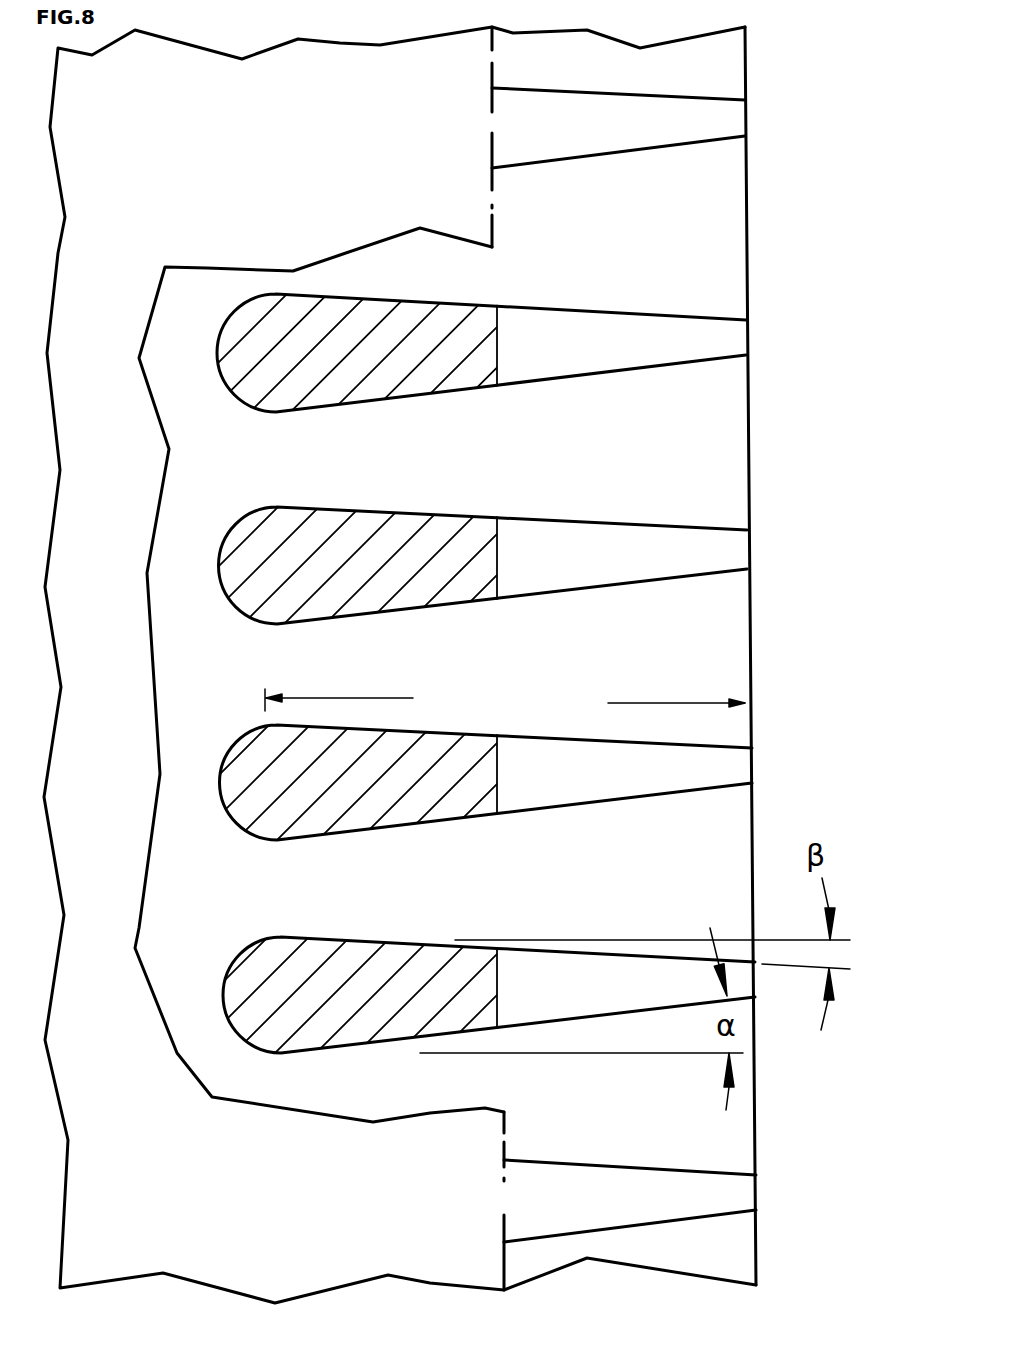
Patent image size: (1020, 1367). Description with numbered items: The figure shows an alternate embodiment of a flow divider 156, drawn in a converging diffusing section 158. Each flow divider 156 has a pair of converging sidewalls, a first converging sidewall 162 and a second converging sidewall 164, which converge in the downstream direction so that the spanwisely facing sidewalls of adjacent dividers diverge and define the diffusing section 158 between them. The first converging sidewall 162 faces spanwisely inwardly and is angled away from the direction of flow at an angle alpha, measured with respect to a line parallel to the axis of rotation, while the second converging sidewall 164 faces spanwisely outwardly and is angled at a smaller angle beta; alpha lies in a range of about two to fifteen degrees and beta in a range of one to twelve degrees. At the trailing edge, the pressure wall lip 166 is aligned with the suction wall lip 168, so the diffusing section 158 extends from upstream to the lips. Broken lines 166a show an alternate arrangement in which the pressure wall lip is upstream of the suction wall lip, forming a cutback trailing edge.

The flow divider 156 is at (582, 724).
The converging diffusing section 158 is at (505, 701).
The first converging sidewall 162 is at (521, 599).
The second converging sidewall 164 is at (556, 517).
The pressure wall lip 166 is at (755, 737).
The suction wall lip 168 is at (755, 737).
The broken lines 166a is at (492, 177).